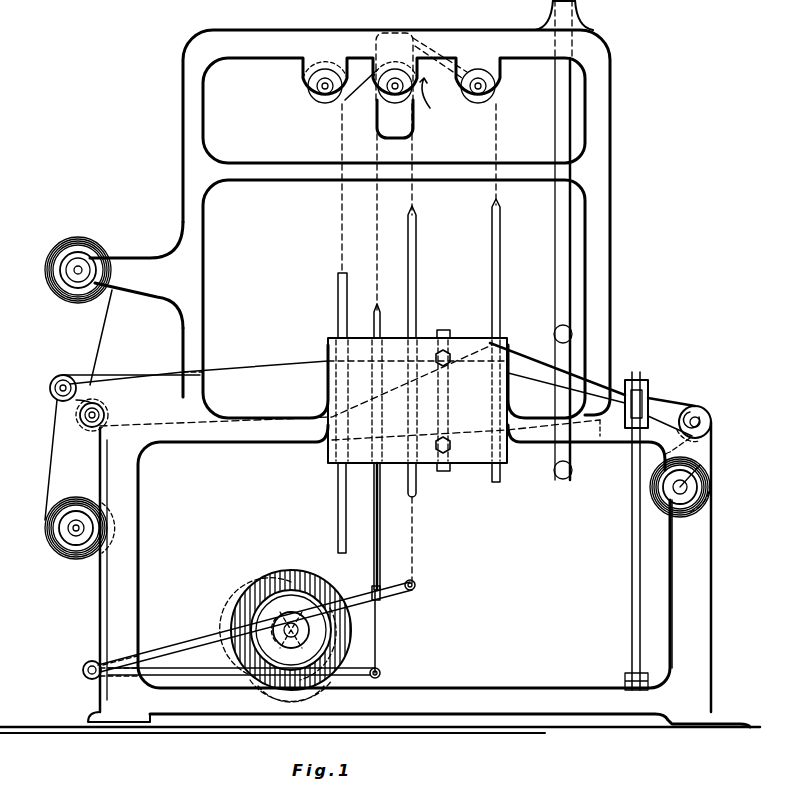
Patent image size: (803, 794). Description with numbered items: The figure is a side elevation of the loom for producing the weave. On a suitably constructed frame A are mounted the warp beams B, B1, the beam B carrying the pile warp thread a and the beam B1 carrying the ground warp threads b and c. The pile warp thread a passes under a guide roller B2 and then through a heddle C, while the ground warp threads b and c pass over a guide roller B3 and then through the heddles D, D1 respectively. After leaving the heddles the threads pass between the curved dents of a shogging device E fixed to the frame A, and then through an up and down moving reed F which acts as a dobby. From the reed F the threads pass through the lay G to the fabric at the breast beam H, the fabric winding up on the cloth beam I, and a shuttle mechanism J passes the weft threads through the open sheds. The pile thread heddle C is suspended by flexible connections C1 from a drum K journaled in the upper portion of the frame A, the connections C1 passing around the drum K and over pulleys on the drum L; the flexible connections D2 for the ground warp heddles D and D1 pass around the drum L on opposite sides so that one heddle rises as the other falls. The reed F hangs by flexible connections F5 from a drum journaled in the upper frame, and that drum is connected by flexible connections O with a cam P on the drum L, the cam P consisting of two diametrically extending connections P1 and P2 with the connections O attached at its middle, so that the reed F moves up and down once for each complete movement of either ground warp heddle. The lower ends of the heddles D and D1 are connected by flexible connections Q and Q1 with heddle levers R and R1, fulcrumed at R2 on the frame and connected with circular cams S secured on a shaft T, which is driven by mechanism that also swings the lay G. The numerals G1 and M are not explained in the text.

The frame A is at (198, 287).
The warp beam B is at (60, 272).
The warp beam B1 is at (64, 542).
The guide roller B2 is at (90, 427).
The guide roller B3 is at (55, 396).
The heddle C is at (270, 366).
The flexible connections C1 is at (340, 226).
The heddle D is at (380, 540).
The heddle D1 is at (416, 484).
The flexible connections D2 is at (410, 220).
The shogging device E is at (443, 404).
The reed F is at (499, 312).
The flexible connections F5 is at (499, 150).
The lay G is at (559, 313).
The lower guide pulley G1 is at (560, 474).
The breast beam H is at (706, 416).
The cloth beam I is at (700, 474).
The shuttle mechanism J is at (646, 387).
The drum K is at (316, 100).
The drum L is at (427, 103).
The pulley M is at (496, 88).
The flexible connections O is at (438, 44).
The cam P is at (378, 116).
The connection P1 is at (410, 130).
The connection P2 is at (400, 40).
The flexible connection Q is at (378, 622).
The flexible connection Q1 is at (414, 578).
The heddle lever R is at (378, 670).
The heddle lever R1 is at (362, 598).
The fulcrum R2 is at (84, 676).
The circular cams S is at (250, 600).
The shaft T is at (291, 622).
The pile warp thread a is at (546, 360).
The ground warp thread b is at (268, 428).
The ground warp thread c is at (545, 381).